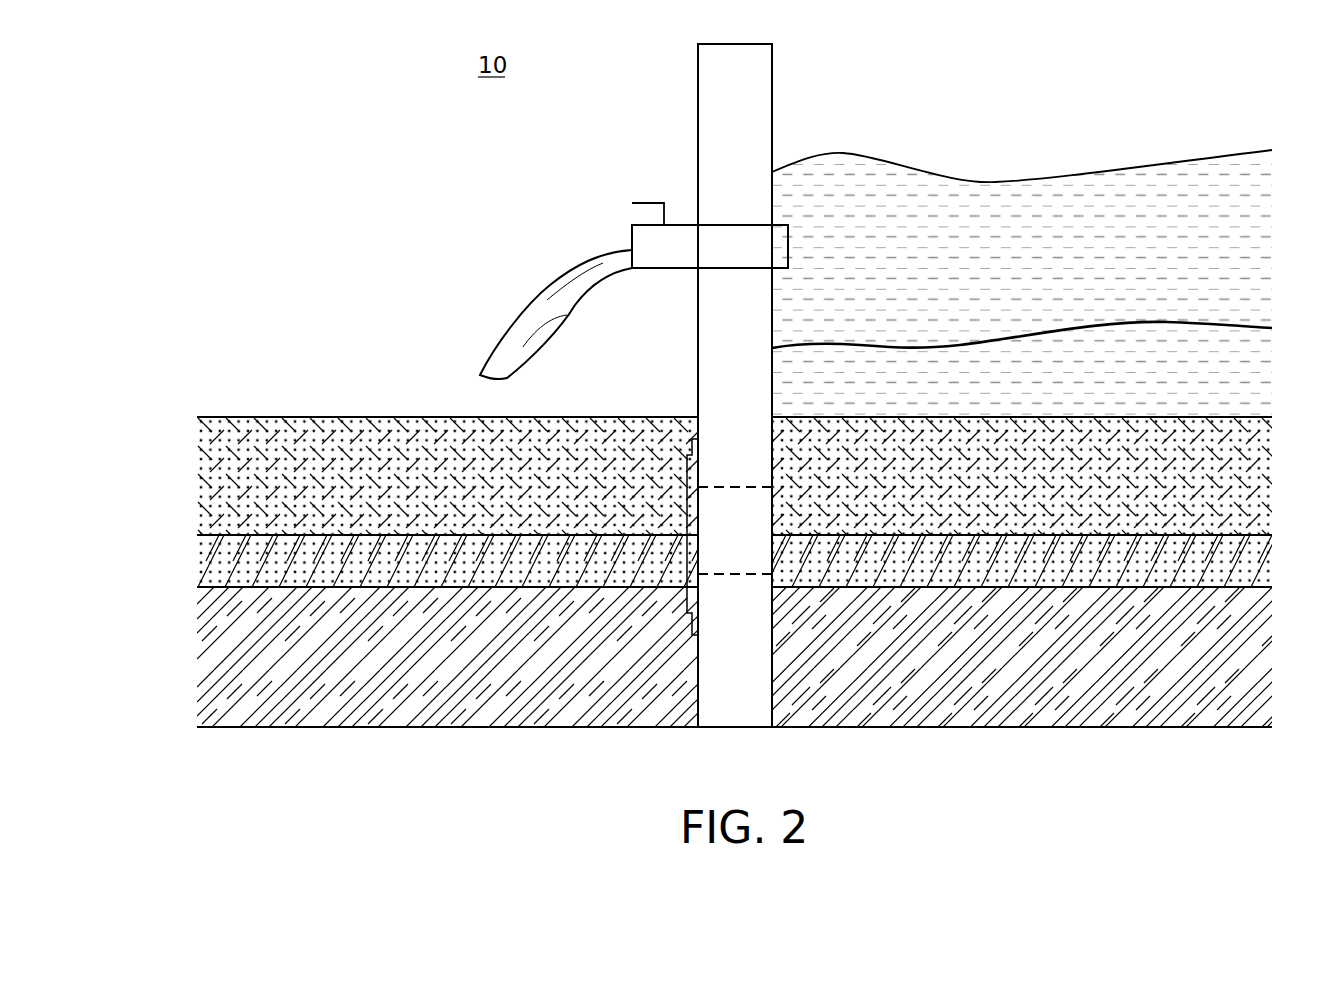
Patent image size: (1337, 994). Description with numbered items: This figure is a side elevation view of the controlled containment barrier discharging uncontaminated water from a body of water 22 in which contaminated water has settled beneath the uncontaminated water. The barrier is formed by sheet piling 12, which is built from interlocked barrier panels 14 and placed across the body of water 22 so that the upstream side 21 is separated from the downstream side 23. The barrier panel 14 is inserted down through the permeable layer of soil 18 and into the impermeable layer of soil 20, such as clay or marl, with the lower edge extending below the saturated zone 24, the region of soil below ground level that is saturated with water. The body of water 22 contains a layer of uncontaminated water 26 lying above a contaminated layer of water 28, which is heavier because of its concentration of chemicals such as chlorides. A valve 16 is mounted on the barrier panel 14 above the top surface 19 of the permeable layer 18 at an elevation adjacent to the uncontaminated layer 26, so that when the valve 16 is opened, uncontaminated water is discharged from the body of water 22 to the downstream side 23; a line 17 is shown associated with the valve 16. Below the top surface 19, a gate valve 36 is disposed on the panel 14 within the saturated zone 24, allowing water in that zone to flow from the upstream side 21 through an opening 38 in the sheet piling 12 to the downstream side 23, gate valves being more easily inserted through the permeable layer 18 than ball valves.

The sheet piling 12 is at (792, 384).
The barrier panel 14 is at (750, 63).
The valve 16 is at (678, 201).
The discharge line 17 is at (640, 201).
The permeable layer of soil 18 is at (275, 440).
The top surface 19 is at (1197, 417).
The impermeable layer of soil 20 is at (478, 715).
The upstream side 21 is at (894, 242).
The body of water 22 is at (903, 160).
The downstream side 23 is at (312, 338).
The saturated zone 24 is at (383, 483).
The layer of uncontaminated water 26 is at (1087, 212).
The contaminated layer of water 28 is at (1255, 377).
The gate valve 36 is at (683, 608).
The opening 38 is at (747, 550).